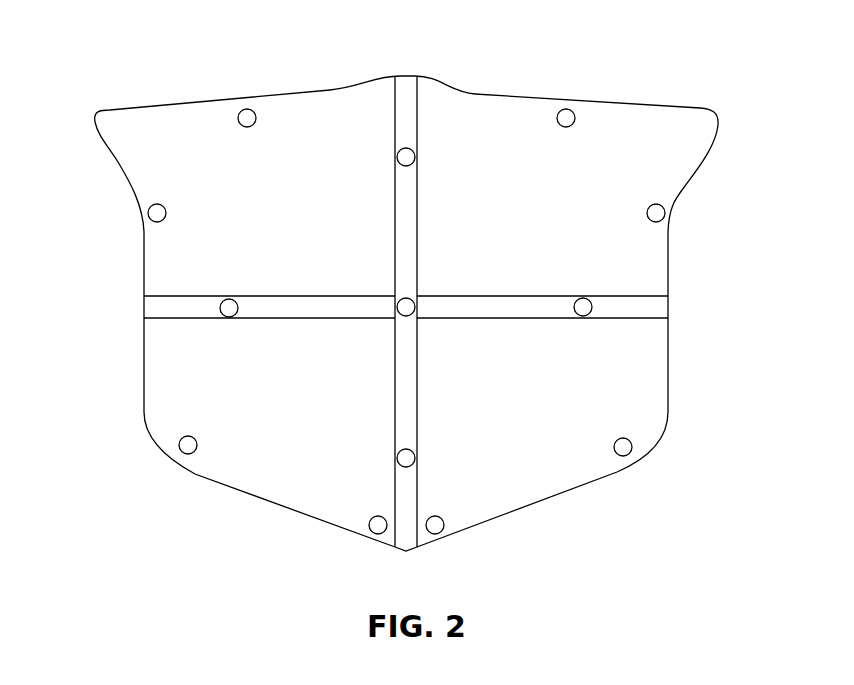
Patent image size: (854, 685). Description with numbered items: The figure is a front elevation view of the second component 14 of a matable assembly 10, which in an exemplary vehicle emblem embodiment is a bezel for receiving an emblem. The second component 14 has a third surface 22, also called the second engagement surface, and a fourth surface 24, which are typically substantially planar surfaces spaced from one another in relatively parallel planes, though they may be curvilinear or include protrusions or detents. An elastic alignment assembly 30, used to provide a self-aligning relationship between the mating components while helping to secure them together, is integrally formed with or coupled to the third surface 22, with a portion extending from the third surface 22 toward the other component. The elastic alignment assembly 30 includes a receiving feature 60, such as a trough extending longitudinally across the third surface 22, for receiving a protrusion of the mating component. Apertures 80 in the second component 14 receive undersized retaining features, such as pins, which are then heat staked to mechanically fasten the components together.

The matable assembly 10 is at (150, 60).
The second component 14 is at (117, 191).
The third surface 22 is at (284, 209).
The fourth surface 24 is at (588, 466).
The elastic alignment assembly 30 is at (426, 104).
The receiving feature 60 is at (660, 294).
The apertures 80 is at (182, 448).